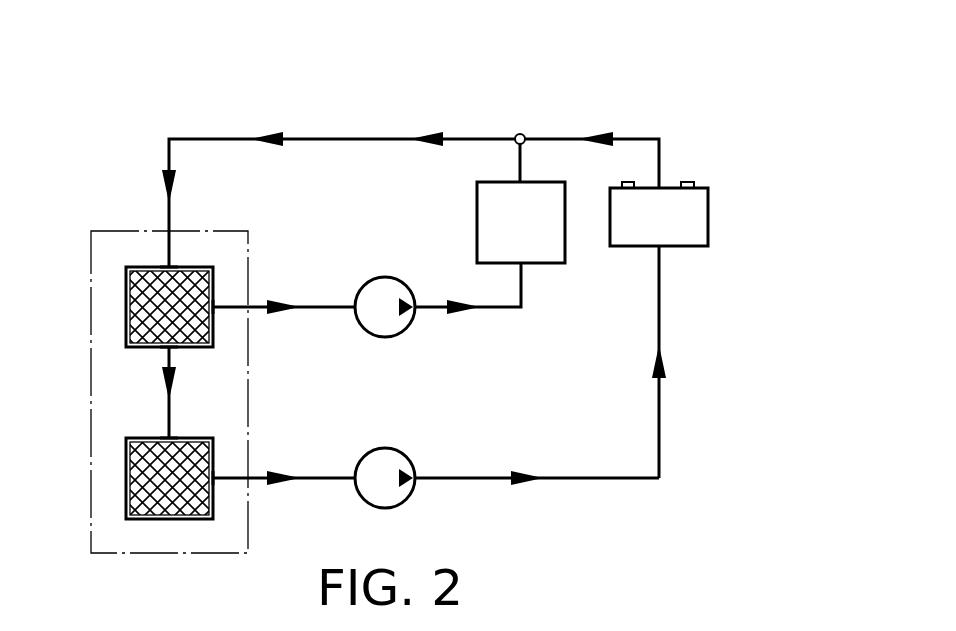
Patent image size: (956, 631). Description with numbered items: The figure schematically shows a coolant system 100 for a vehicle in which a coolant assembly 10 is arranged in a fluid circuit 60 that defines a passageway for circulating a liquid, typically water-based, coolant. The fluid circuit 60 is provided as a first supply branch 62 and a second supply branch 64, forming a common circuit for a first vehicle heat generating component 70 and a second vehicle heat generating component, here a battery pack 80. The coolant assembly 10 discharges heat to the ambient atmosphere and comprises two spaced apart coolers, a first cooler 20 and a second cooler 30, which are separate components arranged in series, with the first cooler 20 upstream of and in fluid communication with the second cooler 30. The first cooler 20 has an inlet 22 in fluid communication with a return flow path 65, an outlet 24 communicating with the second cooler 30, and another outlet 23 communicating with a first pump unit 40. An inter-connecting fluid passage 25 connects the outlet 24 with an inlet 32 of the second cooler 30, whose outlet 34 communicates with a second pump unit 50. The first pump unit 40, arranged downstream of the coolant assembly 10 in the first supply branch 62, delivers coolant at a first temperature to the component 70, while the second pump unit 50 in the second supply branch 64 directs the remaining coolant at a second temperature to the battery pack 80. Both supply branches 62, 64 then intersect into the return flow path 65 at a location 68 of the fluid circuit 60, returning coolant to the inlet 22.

The coolant system 100 is at (590, 72).
The coolant assembly 10 is at (91, 250).
The first cooler 20 is at (126, 305).
The inlet 22 is at (165, 266).
The outlet 23 is at (213, 309).
The outlet 24 is at (165, 348).
The inter-connecting fluid passage 25 is at (167, 417).
The second cooler 30 is at (126, 478).
The inlet 32 is at (167, 437).
The outlet 34 is at (213, 480).
The first pump unit 40 is at (385, 277).
The second pump unit 50 is at (385, 448).
The fluid circuit 60 is at (317, 139).
The first supply branch 62 is at (318, 307).
The second supply branch 64 is at (318, 478).
The return flow path 65 is at (373, 139).
The location 68 is at (520, 134).
The first vehicle heat generating component 70 is at (477, 215).
The battery pack 80 is at (708, 215).